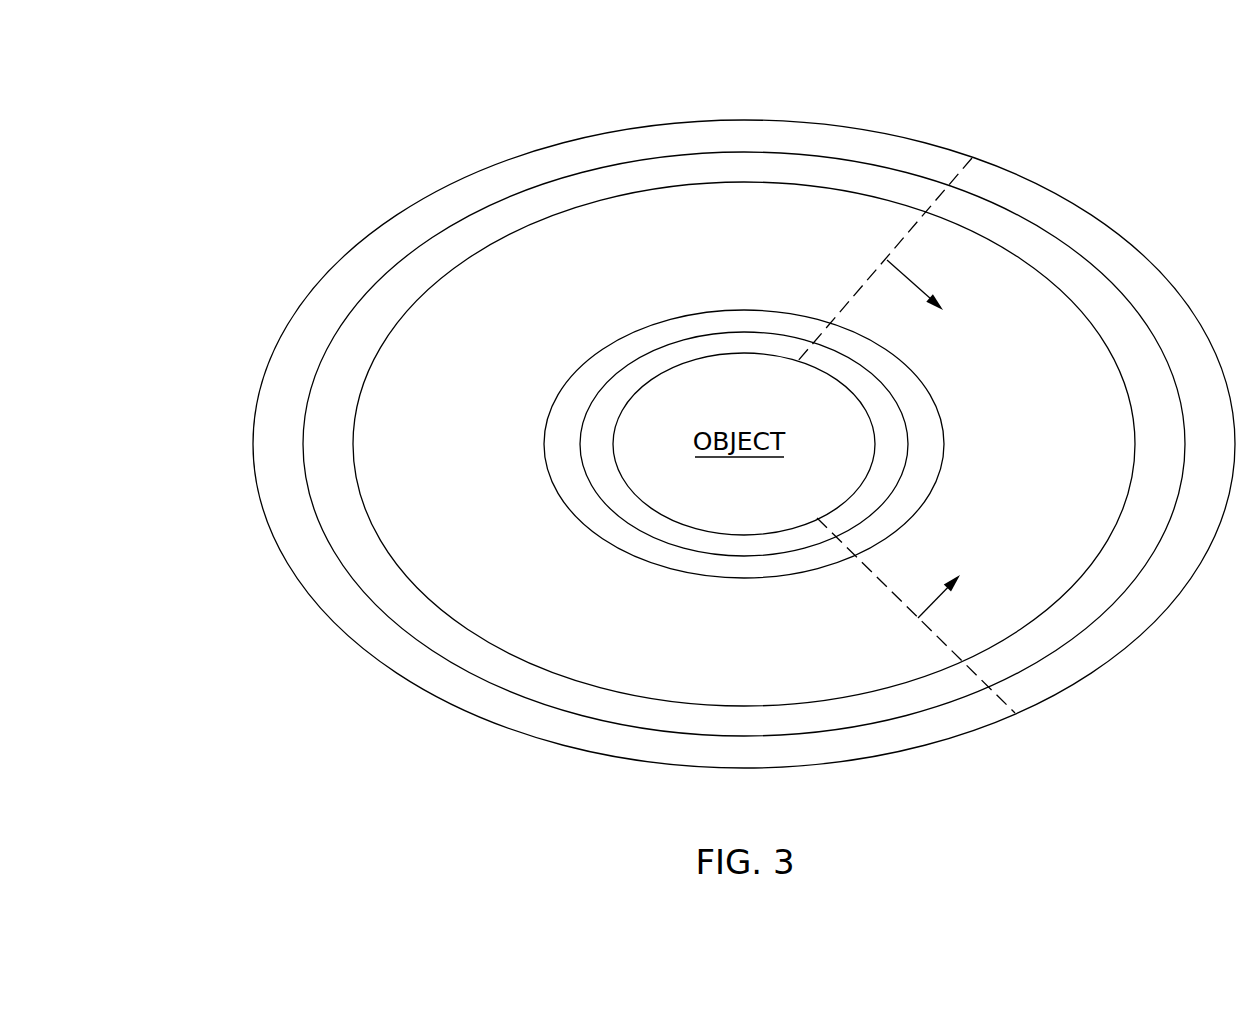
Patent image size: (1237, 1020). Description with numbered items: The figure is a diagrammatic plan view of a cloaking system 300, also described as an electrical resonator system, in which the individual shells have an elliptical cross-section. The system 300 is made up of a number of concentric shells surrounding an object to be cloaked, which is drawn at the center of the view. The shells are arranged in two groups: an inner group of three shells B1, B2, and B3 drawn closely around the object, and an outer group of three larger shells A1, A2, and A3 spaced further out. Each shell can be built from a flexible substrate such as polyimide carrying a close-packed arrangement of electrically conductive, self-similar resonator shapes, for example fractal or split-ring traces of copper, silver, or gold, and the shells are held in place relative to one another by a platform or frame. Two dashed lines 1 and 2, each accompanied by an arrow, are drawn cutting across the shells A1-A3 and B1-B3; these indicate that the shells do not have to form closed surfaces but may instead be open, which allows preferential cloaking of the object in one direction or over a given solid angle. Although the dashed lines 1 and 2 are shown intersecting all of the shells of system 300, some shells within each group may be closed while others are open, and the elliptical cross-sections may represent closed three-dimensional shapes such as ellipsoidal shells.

The system for cloaking 300 is at (355, 119).
The shell A1 is at (507, 648).
The shell A2 is at (463, 667).
The shell A3 is at (427, 688).
The shell B1 is at (613, 437).
The shell B2 is at (580, 436).
The shell B3 is at (544, 438).
The dashed line 1 is at (898, 245).
The dashed line 2 is at (926, 631).